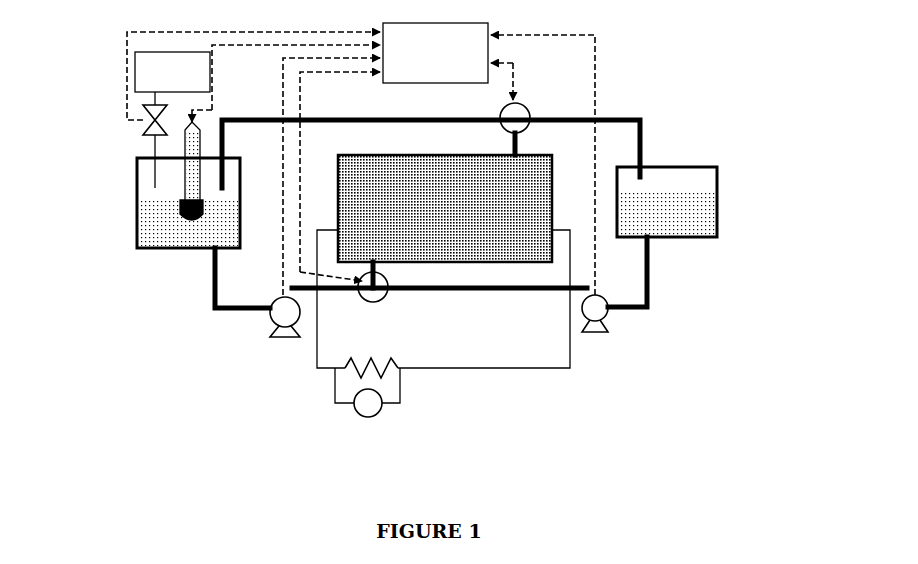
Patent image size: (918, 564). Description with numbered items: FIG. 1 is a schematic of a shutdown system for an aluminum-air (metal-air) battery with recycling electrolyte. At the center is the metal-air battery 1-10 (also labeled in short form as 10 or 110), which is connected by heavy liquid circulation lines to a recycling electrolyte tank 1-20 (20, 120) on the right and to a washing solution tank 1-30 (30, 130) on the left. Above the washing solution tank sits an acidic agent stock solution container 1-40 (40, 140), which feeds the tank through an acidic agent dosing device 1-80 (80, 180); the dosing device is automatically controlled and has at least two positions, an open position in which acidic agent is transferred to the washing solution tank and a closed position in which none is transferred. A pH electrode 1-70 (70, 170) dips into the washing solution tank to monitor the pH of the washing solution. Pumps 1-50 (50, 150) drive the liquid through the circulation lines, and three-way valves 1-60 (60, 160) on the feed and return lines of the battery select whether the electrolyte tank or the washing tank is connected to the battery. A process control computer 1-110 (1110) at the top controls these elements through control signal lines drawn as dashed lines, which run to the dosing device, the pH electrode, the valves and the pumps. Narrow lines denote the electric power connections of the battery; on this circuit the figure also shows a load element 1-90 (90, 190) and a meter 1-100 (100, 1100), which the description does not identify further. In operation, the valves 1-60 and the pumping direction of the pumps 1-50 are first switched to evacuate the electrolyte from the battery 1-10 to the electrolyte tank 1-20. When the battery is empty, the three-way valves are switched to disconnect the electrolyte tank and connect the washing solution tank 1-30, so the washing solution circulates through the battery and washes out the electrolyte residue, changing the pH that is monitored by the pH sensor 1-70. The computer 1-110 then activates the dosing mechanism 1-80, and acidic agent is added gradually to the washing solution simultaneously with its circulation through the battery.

The metal-air battery 1-10 is at (445, 208).
The recycling electrolyte tank 1-20 is at (667, 202).
The washing solution tank 1-30 is at (188, 256).
The acidic agent stock solution container 1-40 is at (172, 72).
The pumps 1-50 is at (441, 328).
The three-way valves 1-60 is at (473, 191).
The pH electrode 1-70 is at (123, 171).
The acidic agent dosing device 1-80 is at (101, 140).
The resistor load 1-90 is at (395, 360).
The voltmeter 1-100 is at (296, 406).
The process control computer 1-110 is at (435, 53).
The electrochemical cell 10 is at (445, 208).
The electrolyte reservoir tank 20 is at (667, 202).
The electrolyte tank 30 is at (175, 258).
The sensor controller 40 is at (172, 72).
The pump 50 is at (441, 328).
The flow sensor 60 is at (529, 100).
The probe sensor 70 is at (178, 207).
The valve 80 is at (147, 146).
The resistor load 90 is at (373, 363).
The voltmeter 100 is at (352, 415).
The control unit 110 is at (435, 53).
The electrolyte reservoir tank 120 is at (667, 202).
The electrolyte tank 130 is at (188, 256).
The sensor controller 140 is at (172, 72).
The pump 150 is at (441, 328).
The flow sensor 160 is at (473, 191).
The probe sensor 170 is at (123, 171).
The valve 180 is at (101, 140).
The resistor load 190 is at (395, 360).
The voltmeter 1100 is at (296, 406).
The control unit 1110 is at (435, 53).